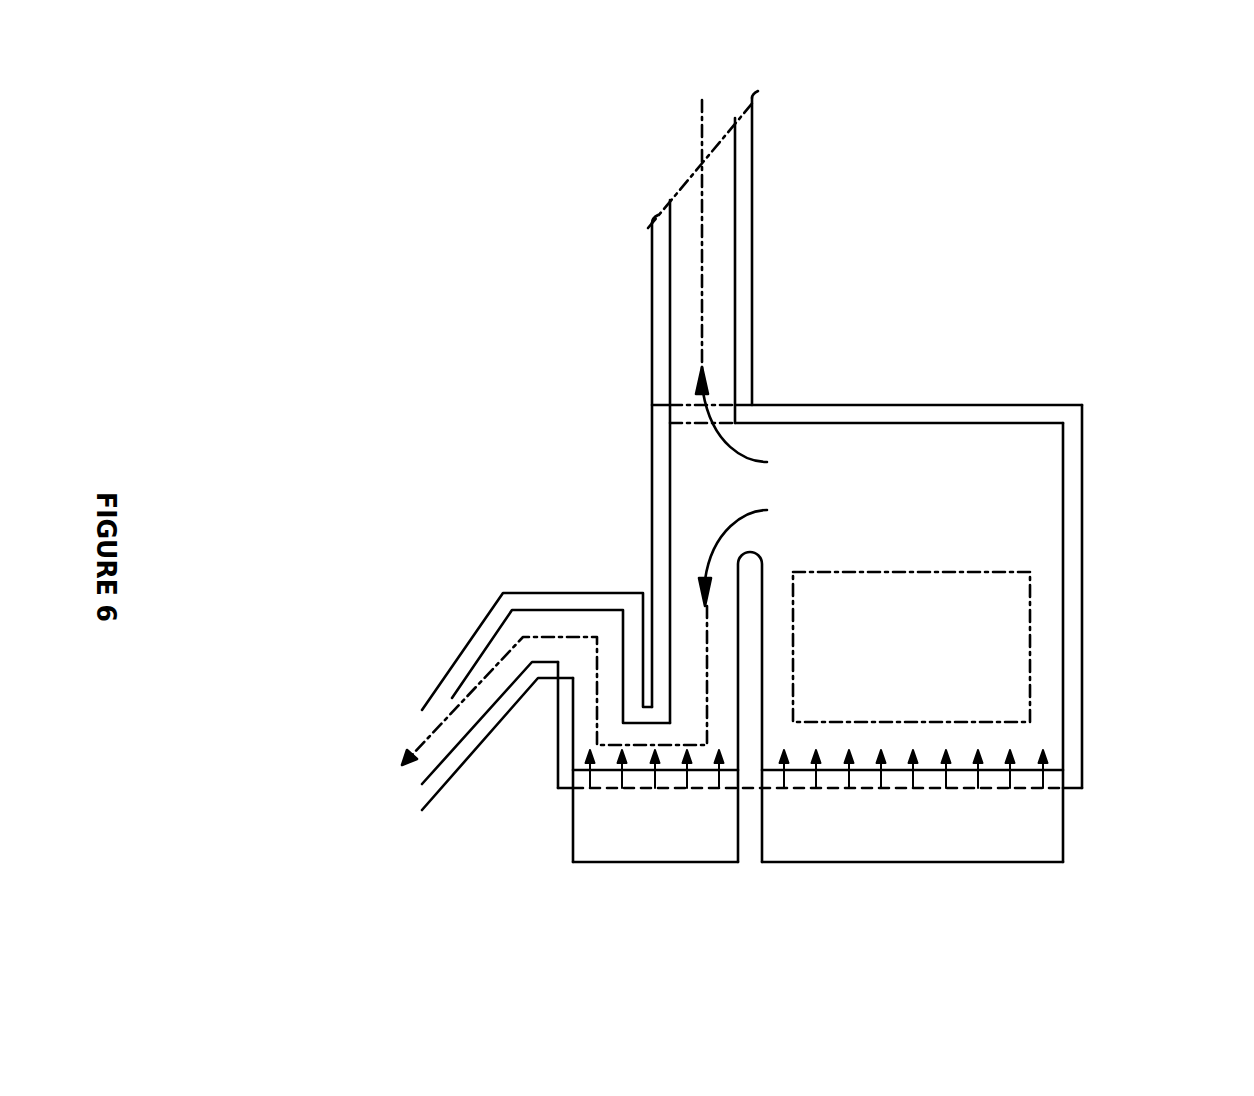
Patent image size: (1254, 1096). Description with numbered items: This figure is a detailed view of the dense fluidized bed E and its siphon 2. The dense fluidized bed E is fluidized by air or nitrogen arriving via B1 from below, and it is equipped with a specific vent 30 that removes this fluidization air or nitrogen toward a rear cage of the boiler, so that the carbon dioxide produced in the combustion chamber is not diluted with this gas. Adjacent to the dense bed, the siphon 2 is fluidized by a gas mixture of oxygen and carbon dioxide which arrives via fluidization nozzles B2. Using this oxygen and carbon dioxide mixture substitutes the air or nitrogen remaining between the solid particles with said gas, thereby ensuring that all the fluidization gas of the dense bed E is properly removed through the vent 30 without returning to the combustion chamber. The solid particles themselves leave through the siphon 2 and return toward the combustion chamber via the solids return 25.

The siphon 2 is at (590, 715).
The solids return 25 is at (442, 701).
The vent 30 is at (720, 263).
The dense fluidized bed E is at (1043, 523).
The fluidization air or nitrogen inlet B1 is at (1045, 772).
The fluidization nozzles B2 is at (588, 770).